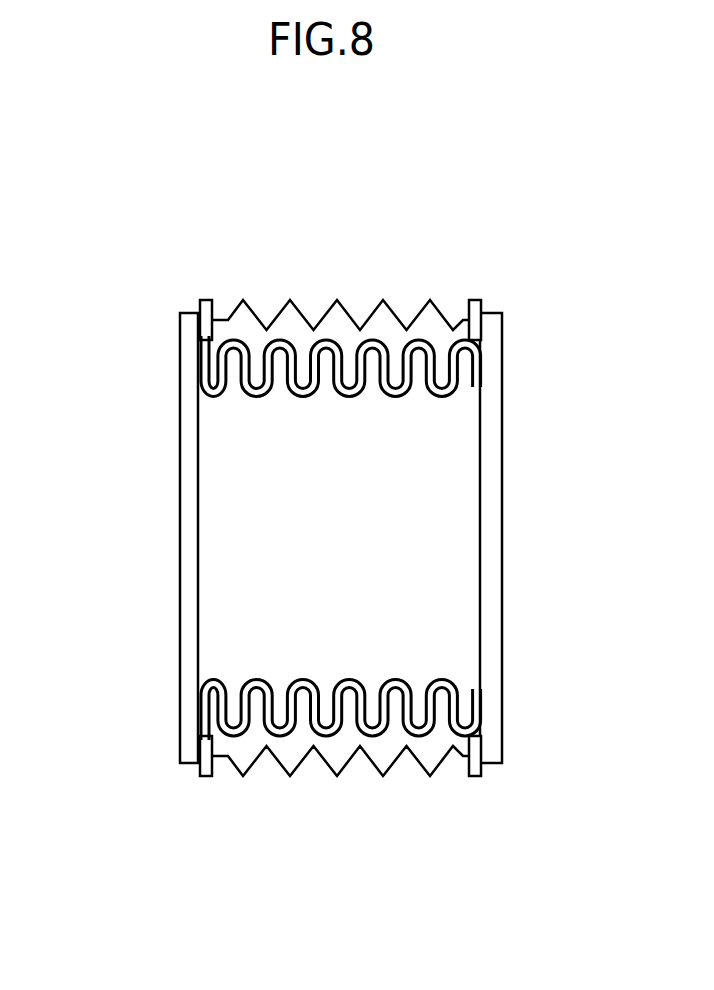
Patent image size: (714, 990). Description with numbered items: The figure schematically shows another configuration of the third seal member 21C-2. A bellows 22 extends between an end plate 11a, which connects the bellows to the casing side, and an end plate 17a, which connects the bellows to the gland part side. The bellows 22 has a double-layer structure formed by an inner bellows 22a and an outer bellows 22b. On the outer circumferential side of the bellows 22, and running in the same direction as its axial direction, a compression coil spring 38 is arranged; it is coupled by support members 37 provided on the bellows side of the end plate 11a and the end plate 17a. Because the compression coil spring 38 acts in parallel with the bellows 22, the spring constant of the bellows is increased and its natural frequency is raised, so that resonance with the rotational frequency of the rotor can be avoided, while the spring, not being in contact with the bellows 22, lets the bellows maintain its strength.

The third seal member 21C-2 is at (389, 168).
The end plate 11a is at (180, 628).
The end plate 17a is at (503, 637).
The support member 37 is at (206, 299).
The compression coil spring 38 is at (334, 299).
The bellows 22 is at (257, 538).
The inner bellows 22a is at (231, 374).
The outer bellows 22b is at (257, 388).